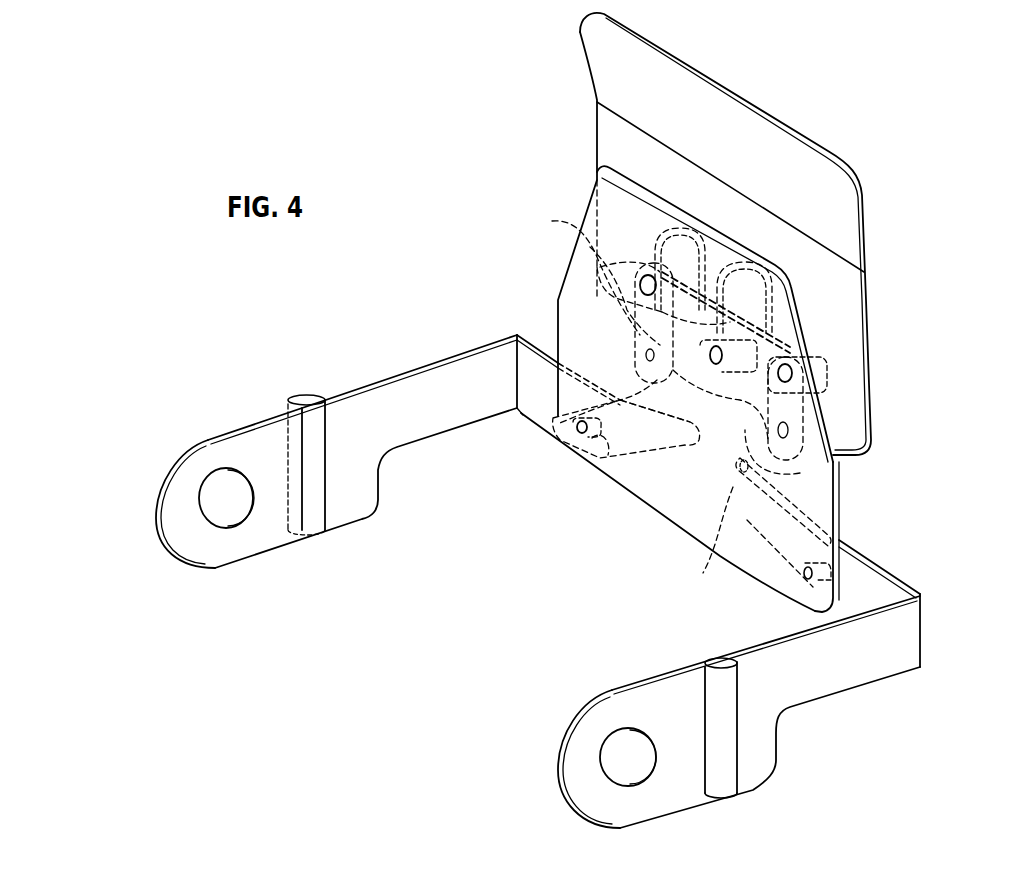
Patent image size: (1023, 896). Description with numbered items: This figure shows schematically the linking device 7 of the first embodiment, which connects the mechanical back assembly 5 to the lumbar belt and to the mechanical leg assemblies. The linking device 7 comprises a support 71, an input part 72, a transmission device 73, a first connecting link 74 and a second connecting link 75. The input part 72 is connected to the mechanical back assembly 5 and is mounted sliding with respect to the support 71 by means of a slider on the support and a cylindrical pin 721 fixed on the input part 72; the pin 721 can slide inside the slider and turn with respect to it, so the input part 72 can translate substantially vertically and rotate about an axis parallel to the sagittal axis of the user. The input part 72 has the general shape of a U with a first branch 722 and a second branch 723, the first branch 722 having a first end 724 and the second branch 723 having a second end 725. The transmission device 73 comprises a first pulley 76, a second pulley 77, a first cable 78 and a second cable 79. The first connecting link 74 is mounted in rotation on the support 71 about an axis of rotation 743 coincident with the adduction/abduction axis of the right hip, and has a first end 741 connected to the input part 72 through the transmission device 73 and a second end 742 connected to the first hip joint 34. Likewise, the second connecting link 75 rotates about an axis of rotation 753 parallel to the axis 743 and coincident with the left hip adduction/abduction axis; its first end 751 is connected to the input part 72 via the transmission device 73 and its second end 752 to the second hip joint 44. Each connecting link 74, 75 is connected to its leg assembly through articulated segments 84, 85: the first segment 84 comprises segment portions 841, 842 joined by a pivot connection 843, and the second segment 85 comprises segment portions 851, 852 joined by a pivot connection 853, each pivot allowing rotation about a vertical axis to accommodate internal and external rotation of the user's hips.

The linking device 7 is at (412, 152).
The mechanical back assembly 5 is at (826, 140).
The first hip joint 34 is at (239, 504).
The second hip joint 44 is at (641, 765).
The support 71 is at (824, 497).
The input part 72 is at (787, 330).
The transmission device 73 is at (548, 250).
The first connecting link 74 is at (629, 447).
The second connecting link 75 is at (772, 527).
The first pulley 76 is at (681, 243).
The second pulley 77 is at (736, 273).
The first cable 78 is at (582, 275).
The second cable 79 is at (805, 350).
The cylindrical pin 721 is at (830, 374).
The first branch 722 is at (637, 347).
The second branch 723 is at (805, 426).
The first end 724 is at (576, 425).
The second end 725 is at (800, 473).
The first end 741 is at (670, 450).
The second end 742 is at (523, 417).
The axis of rotation 743 is at (592, 438).
The first end 751 is at (703, 573).
The second end 752 is at (926, 620).
The axis of rotation 753 is at (835, 565).
The first segment 84 is at (336, 449).
The segment portion 841 is at (470, 372).
The segment portion 842 is at (247, 437).
The pivot connection 843 is at (317, 417).
The second segment 85 is at (739, 716).
The segment portion 851 is at (770, 660).
The segment portion 852 is at (647, 700).
The pivot connection 853 is at (737, 753).